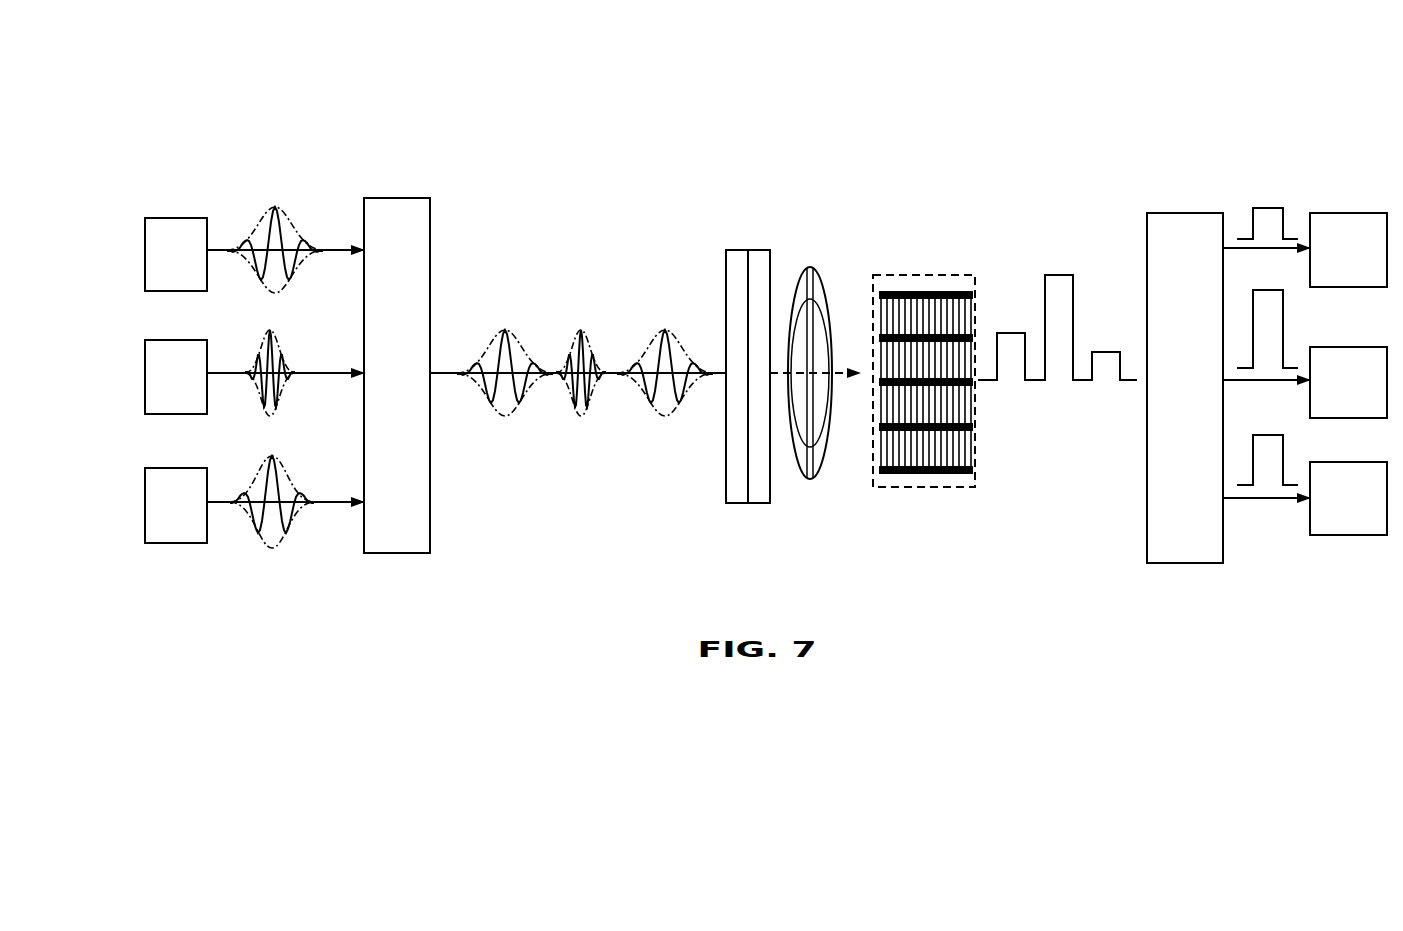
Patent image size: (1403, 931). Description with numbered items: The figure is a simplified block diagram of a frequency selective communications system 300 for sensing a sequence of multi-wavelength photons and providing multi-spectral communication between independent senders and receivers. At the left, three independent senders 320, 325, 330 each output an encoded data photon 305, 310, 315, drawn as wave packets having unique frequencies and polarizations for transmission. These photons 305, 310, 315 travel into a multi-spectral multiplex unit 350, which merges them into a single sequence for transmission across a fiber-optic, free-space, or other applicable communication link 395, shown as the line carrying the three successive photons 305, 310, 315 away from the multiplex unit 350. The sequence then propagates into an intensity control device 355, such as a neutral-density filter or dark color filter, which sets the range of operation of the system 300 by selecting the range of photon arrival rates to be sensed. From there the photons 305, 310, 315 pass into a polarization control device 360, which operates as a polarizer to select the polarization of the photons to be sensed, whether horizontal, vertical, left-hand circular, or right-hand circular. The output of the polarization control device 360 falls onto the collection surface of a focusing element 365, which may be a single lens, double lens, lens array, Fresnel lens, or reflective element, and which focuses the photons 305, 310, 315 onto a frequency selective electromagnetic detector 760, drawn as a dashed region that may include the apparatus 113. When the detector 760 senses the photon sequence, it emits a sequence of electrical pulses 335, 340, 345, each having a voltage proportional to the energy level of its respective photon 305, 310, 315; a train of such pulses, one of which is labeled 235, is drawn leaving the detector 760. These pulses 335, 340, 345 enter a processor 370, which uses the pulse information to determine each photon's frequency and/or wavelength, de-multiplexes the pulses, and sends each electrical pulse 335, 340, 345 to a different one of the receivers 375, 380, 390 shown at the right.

The frequency selective communications system 300 is at (605, 96).
The encoded data photon 305 is at (275, 207).
The encoded data photon 310 is at (270, 331).
The encoded data photon 315 is at (272, 456).
The sender 320 is at (164, 218).
The sender 325 is at (164, 340).
The sender 330 is at (164, 468).
The electrical pulse 335 is at (1262, 435).
The electrical pulse 340 is at (1058, 273).
The electrical pulse 345 is at (1110, 350).
The multi-spectral multiplex unit 350 is at (376, 198).
The intensity control device 355 is at (733, 250).
The polarization control device 360 is at (757, 250).
The focusing element 365 is at (813, 268).
The processor 370 is at (1177, 213).
The receiver 375 is at (1333, 213).
The receiver 380 is at (1333, 347).
The receiver 390 is at (1333, 462).
The communication link 395 is at (450, 417).
The frequency selective electromagnetic detector 760 is at (934, 341).
The apparatus 113 is at (953, 283).
The electrical pulse 235 is at (1010, 331).